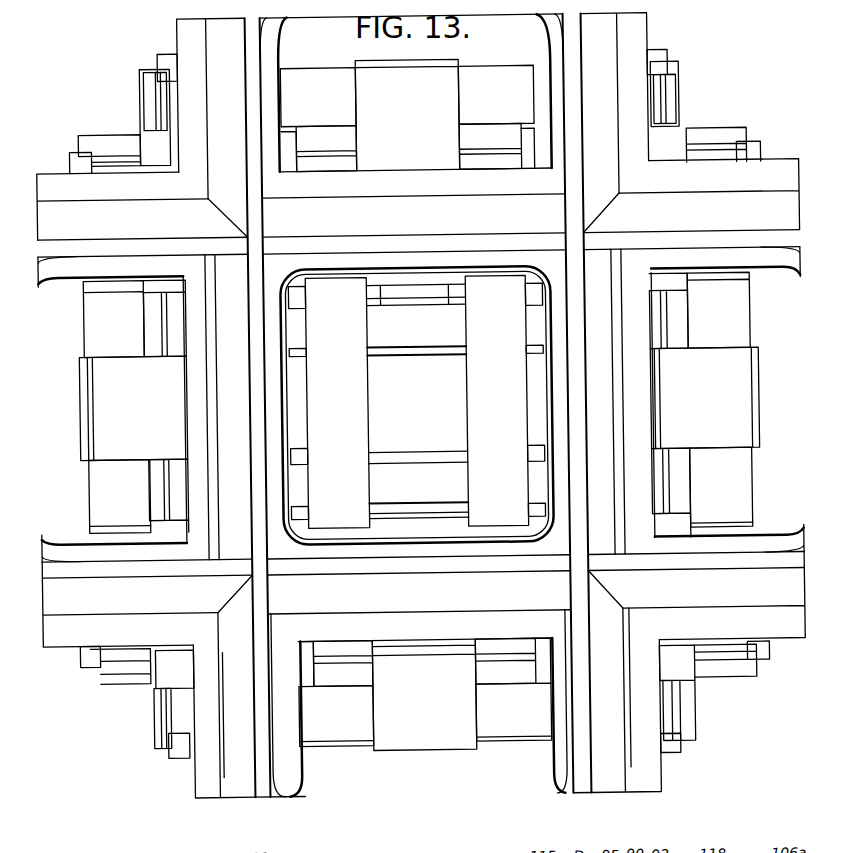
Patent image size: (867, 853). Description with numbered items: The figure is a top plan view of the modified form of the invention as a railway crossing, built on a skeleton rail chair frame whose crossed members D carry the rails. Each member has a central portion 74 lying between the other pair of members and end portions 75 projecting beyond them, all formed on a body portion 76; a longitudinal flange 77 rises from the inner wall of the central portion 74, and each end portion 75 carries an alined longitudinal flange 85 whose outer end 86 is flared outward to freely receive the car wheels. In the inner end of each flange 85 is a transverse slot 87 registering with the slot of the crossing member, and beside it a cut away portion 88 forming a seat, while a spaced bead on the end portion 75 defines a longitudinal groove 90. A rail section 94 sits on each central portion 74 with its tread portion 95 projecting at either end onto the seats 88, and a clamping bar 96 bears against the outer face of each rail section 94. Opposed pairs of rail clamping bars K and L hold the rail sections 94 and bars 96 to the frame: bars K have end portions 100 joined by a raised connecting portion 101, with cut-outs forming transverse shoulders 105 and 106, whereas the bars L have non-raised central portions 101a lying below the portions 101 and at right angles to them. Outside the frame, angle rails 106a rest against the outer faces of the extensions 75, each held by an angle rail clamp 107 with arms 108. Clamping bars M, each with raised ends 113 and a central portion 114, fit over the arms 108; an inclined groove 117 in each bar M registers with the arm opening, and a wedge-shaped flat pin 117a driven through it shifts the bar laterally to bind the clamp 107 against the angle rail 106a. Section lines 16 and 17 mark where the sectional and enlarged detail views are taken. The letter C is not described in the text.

The section line 16- 16 is at (53, 488).
The section line 17- 17 is at (145, 790).
The central portion 74 is at (384, 292).
The end portion 75 is at (291, 106).
The body portion 76 is at (441, 292).
The longitudinal flange 77 is at (345, 283).
The longitudinal flange 85 is at (266, 88).
The outer end of flange 86 is at (284, 41).
The transverse slot 87 is at (421, 406).
The cut away portion 88 is at (560, 192).
The longitudinal groove 90 is at (132, 238).
The rail section 94 is at (415, 404).
The tread portion 95 is at (268, 222).
The clamping bar 96 is at (419, 405).
The end portion 100 is at (460, 170).
The raised connecting portion 101 is at (440, 425).
The central portion 101a is at (440, 466).
The transverse shoulder 105 is at (353, 173).
The transverse shoulder 106 is at (320, 276).
The angle rail 106a is at (785, 140).
The angle rail clamp 107 is at (416, 404).
The arm 108 is at (180, 34).
The raised end 113 is at (82, 292).
The central portion 114 is at (88, 342).
The inclined groove 117 is at (681, 80).
The wedge-shaped flat pin 117a is at (674, 56).
The chamber C is at (500, 280).
The crossed frame member D is at (282, 410).
The rail clamping bar K is at (370, 414).
The rail clamping bar L is at (449, 351).
The clamping bar M is at (385, 780).